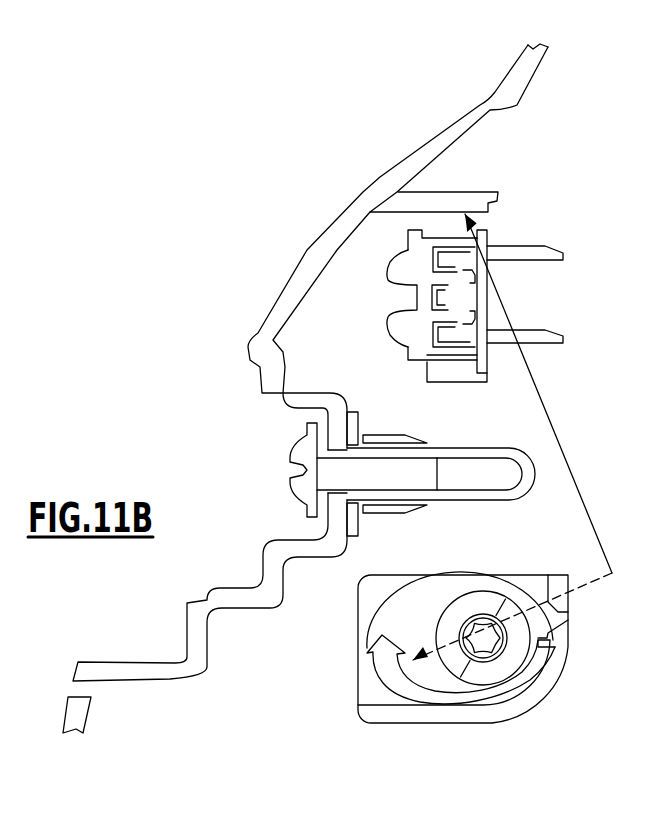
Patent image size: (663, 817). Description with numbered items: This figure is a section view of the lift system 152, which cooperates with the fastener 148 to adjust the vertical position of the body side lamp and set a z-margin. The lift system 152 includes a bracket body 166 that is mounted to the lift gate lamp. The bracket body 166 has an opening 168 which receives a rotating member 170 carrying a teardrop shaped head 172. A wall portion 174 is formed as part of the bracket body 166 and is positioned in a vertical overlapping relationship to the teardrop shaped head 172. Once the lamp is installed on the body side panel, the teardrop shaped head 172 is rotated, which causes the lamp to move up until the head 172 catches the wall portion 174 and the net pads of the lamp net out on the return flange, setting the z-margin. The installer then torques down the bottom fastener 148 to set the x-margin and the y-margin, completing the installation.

The fastener 148 is at (323, 468).
The lift system 152 is at (245, 243).
The bracket body 166 is at (363, 192).
The opening 168 is at (487, 246).
The rotating member 170 is at (403, 327).
The teardrop shaped head 172 is at (411, 230).
The wall portion 174 is at (455, 196).